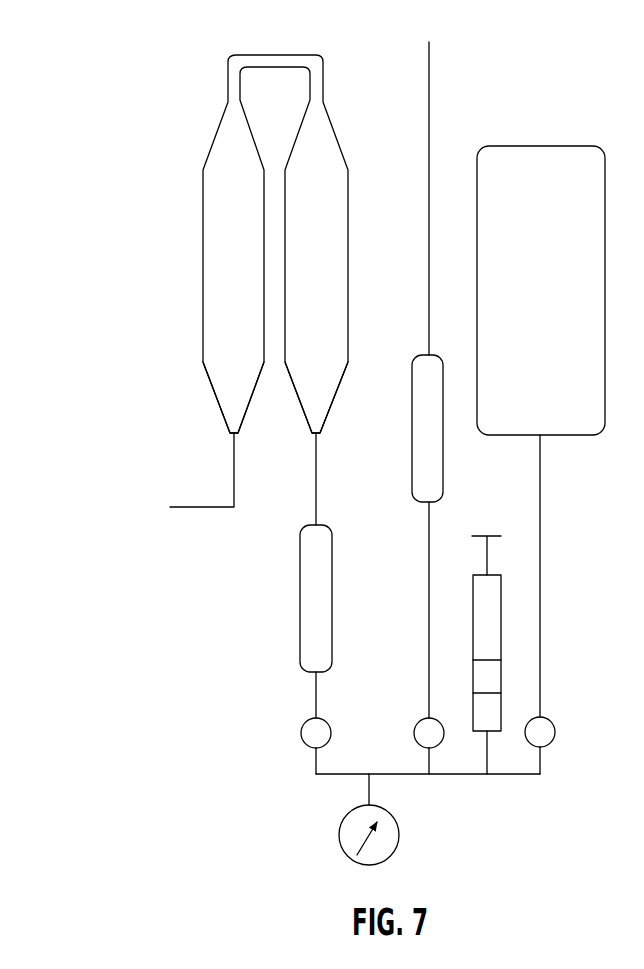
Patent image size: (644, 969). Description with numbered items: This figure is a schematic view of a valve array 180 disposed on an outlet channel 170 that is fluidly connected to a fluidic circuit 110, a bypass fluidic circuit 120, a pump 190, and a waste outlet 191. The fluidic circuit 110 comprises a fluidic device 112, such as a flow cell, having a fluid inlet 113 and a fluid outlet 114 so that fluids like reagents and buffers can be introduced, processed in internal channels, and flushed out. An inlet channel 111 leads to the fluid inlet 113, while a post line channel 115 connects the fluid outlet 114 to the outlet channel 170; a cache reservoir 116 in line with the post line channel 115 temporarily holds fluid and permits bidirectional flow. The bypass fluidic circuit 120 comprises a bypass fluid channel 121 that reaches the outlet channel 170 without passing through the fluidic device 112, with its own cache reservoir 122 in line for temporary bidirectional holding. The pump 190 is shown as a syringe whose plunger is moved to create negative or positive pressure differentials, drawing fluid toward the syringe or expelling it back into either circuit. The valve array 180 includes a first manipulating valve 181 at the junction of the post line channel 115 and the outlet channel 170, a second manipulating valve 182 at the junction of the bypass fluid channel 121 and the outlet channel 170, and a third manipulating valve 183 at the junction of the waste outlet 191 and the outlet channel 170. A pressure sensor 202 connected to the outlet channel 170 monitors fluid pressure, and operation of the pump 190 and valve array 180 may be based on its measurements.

The fluidic circuit 110 is at (140, 447).
The inlet channel 111 is at (204, 507).
The fluidic device 112 is at (232, 146).
The fluid inlet 113 is at (228, 390).
The fluid outlet 114 is at (327, 382).
The post line channel 115 is at (318, 493).
The cache reservoir 116 is at (311, 612).
The bypass fluidic circuit 120 is at (415, 52).
The bypass fluid channel 121 is at (429, 98).
The cache reservoir 122 is at (422, 364).
The outlet channel 170 is at (461, 776).
The valve array 180 is at (220, 762).
The first manipulating valve 181 is at (305, 720).
The second manipulating valve 182 is at (416, 739).
The third manipulating valve 183 is at (548, 745).
The pump 190 is at (501, 598).
The waste outlet 191 is at (541, 146).
The pressure sensor 202 is at (347, 815).